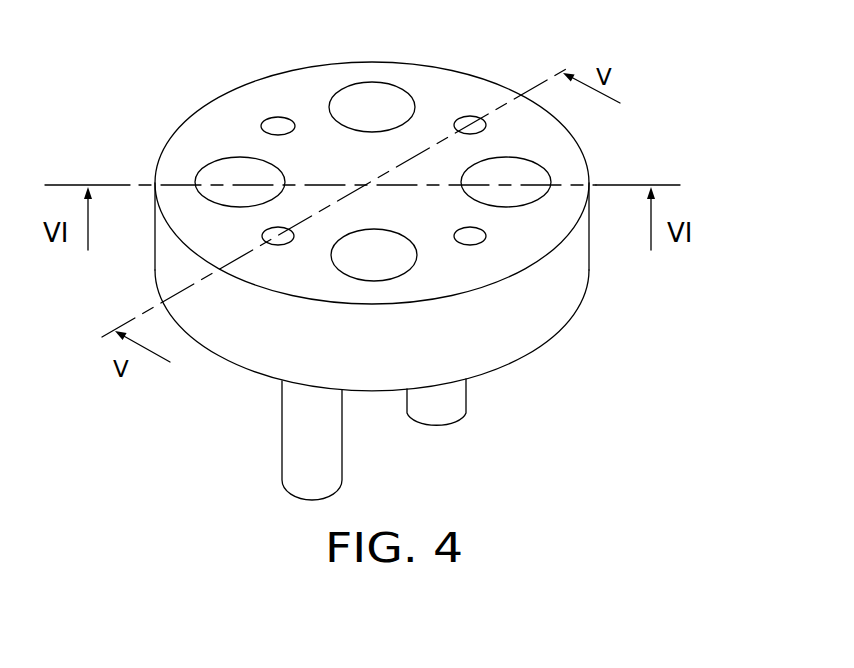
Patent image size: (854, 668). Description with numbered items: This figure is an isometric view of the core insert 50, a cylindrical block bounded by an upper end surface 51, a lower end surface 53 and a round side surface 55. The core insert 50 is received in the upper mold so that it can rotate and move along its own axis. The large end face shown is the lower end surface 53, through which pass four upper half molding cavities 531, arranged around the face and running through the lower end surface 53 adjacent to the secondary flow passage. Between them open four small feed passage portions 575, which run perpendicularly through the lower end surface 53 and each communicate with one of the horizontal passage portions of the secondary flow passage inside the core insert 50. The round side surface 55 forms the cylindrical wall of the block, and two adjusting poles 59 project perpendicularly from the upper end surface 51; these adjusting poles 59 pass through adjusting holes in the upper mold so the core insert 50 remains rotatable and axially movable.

The core insert 50 is at (356, 255).
The upper end surface 51 is at (386, 201).
The lower end surface 53 is at (336, 146).
The upper half molding cavities 531 is at (367, 97).
The feed passage portions 575 is at (279, 122).
The round side surface 55 is at (521, 330).
The adjusting poles 59 is at (305, 435).